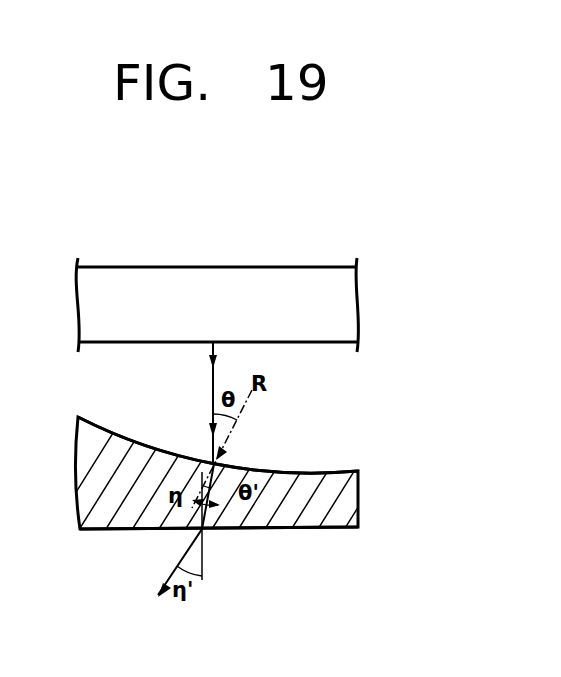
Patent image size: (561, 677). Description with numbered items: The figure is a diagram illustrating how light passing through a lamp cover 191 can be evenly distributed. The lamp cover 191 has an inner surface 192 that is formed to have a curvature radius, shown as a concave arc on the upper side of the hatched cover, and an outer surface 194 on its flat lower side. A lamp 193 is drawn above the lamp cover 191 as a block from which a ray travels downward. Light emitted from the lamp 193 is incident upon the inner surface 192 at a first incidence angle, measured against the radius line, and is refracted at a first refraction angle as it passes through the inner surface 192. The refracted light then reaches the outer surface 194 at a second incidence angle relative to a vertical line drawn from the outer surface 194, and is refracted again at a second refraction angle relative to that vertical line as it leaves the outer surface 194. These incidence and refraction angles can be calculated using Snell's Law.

The lamp cover 191 is at (350, 504).
The inner surface 192 is at (312, 472).
The lamp 193 is at (348, 303).
The outer surface 194 is at (284, 530).